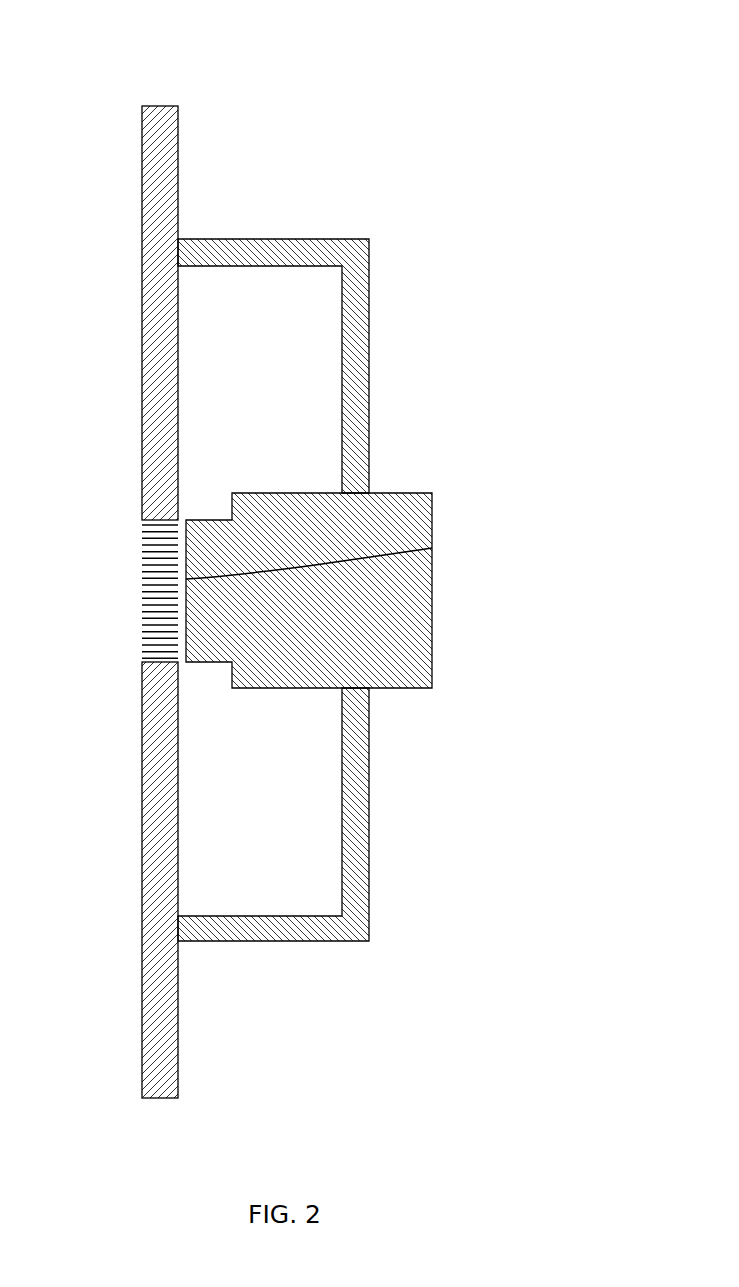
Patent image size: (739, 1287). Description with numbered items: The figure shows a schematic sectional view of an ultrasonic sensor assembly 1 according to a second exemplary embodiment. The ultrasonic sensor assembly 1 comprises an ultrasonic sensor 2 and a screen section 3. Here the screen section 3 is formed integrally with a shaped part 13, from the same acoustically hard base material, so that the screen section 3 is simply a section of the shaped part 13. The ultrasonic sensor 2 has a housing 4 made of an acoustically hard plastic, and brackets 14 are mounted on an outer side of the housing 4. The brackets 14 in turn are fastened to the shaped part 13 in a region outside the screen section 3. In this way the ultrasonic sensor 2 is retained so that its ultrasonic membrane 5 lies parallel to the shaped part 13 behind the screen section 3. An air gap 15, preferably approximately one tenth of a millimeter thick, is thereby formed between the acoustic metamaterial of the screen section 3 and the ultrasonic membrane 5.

The ultrasonic sensor assembly 1 is at (536, 66).
The ultrasonic sensor 2 is at (462, 516).
The screen section 3 is at (117, 520).
The housing 4 is at (432, 617).
The ultrasonic membrane 5 is at (432, 548).
The shaped part 13 is at (178, 135).
The brackets 14 is at (370, 310).
The air gap 15 is at (178, 530).